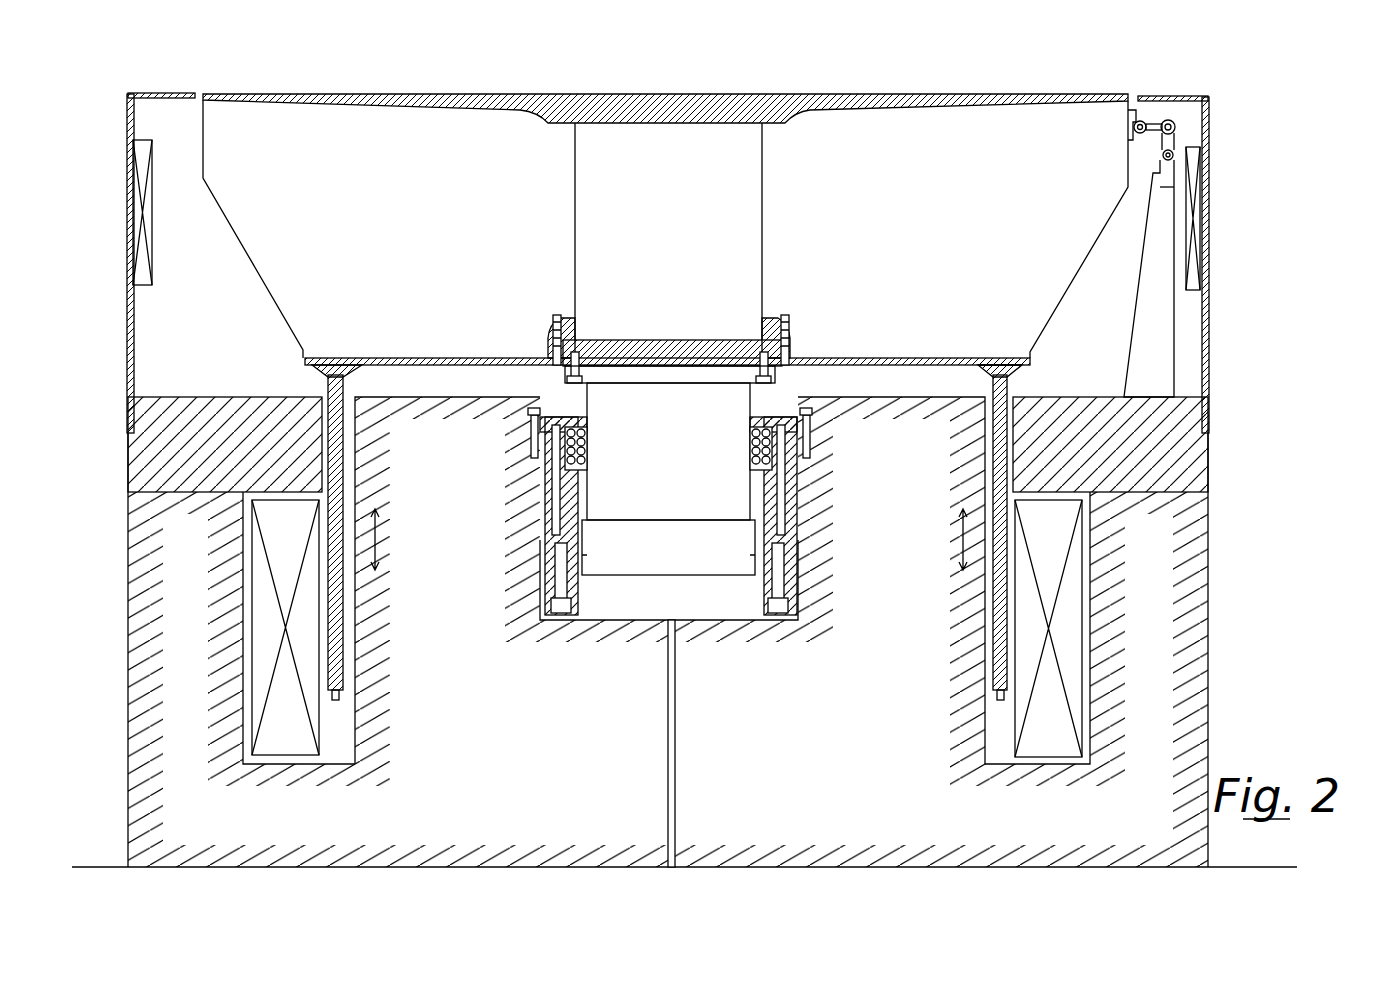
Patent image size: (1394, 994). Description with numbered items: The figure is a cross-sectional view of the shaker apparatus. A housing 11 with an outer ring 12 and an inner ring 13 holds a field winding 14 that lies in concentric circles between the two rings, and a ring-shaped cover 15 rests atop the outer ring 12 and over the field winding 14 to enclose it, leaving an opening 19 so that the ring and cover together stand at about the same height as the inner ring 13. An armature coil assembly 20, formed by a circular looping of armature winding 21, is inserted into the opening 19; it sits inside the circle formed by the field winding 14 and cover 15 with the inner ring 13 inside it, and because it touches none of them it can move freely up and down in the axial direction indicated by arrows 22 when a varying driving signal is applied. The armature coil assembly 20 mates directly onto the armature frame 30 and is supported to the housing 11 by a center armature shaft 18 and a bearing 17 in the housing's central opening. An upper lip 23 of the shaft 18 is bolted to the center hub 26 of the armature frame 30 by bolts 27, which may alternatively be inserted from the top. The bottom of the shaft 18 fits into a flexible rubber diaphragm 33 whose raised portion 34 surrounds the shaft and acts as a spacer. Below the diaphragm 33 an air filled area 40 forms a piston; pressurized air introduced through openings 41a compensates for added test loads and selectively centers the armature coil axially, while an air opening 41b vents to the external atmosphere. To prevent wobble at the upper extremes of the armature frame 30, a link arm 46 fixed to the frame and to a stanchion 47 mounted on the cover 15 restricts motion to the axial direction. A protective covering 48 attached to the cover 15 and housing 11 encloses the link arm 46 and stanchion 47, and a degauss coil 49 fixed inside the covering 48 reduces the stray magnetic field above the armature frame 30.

The housing 11 is at (1208, 565).
The outer ring 12 is at (128, 610).
The inner ring 13 is at (670, 580).
The field winding 14 is at (666, 628).
The cover 15 is at (668, 444).
The bearing 17 is at (586, 437).
The armature shaft 18 is at (668, 451).
The opening 19 is at (325, 395).
The armature coil assembly 20 is at (990, 380).
The armature winding 21 is at (1012, 378).
The arrows 22 is at (378, 535).
The upper lip 23 is at (560, 375).
The center hub 26 is at (676, 345).
The bolts 27 is at (580, 357).
The armature frame 30 is at (262, 288).
The diaphragm 33 is at (702, 577).
The raised portion 34 is at (584, 556).
The air filled area 40 is at (670, 514).
The openings 41a is at (542, 562).
The air opening 41b is at (676, 688).
The link arm 46 is at (1150, 125).
The stanchion 47 is at (1167, 288).
The protective covering 48 is at (128, 106).
The degauss coil 49 is at (140, 212).